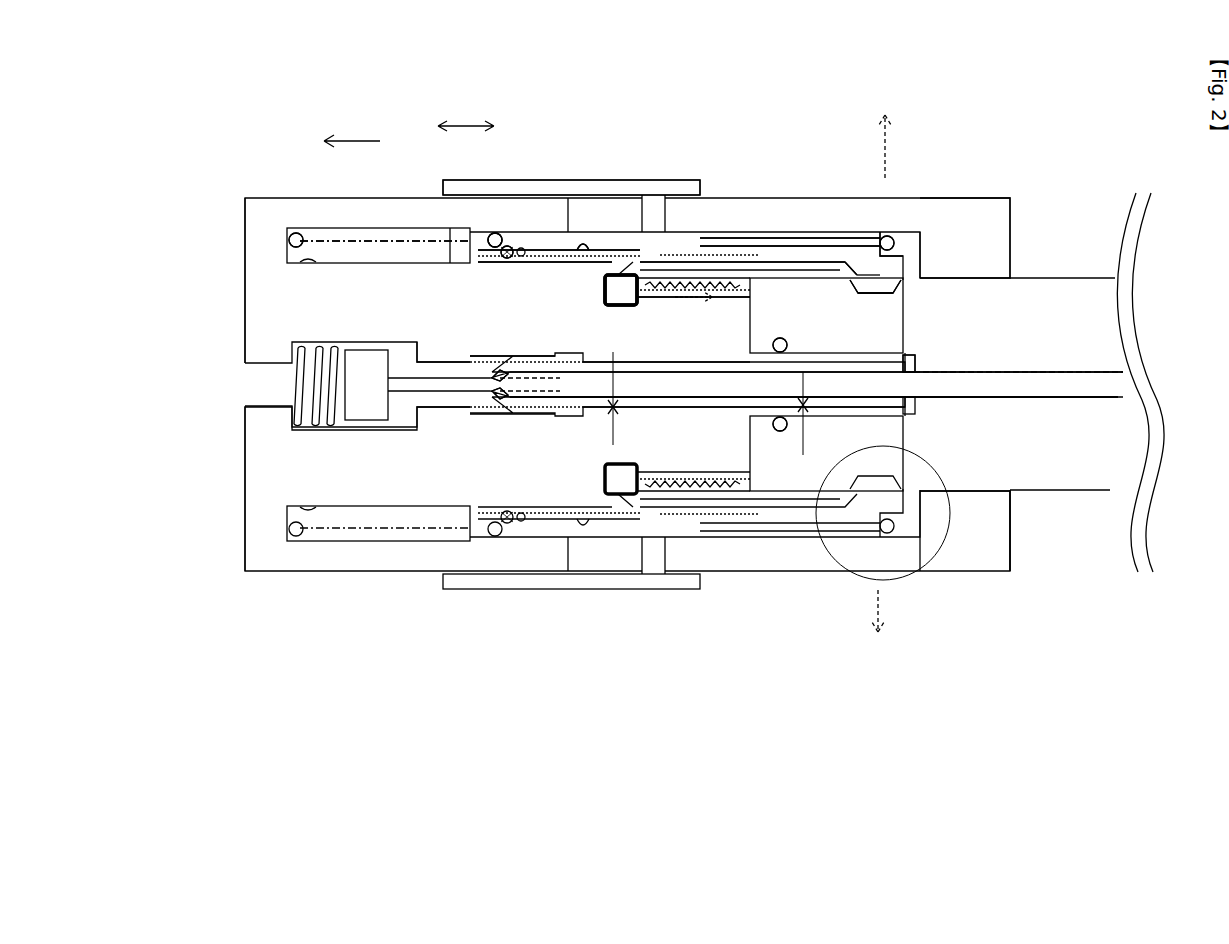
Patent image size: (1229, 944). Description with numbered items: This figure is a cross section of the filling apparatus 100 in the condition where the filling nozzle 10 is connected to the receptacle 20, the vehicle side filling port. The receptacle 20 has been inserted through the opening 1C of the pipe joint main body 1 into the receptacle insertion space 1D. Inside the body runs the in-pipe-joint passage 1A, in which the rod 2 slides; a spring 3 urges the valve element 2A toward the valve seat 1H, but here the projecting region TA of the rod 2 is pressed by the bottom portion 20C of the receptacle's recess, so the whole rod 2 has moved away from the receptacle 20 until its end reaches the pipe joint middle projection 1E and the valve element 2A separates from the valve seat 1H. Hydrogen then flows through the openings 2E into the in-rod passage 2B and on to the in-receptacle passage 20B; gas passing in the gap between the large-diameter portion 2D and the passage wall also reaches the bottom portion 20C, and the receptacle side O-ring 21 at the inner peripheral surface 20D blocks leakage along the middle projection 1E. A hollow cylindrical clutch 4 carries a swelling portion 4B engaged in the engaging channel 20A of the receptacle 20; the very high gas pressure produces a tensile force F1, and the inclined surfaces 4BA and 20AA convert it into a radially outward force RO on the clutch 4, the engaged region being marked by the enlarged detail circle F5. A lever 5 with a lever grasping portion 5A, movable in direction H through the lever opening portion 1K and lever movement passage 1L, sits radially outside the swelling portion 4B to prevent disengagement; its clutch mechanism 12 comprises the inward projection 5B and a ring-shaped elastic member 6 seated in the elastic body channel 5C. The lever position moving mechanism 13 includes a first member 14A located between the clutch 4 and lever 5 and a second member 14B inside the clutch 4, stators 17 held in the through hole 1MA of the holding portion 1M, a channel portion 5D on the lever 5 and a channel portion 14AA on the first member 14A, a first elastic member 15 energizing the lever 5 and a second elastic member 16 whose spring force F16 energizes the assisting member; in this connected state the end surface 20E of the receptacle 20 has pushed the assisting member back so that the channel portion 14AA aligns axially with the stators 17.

The pipe joint main body 1 is at (255, 247).
The in-pipe-joint passage 1A is at (470, 420).
The opening 1C is at (1012, 284).
The receptacle insertion space 1D is at (1042, 490).
The pipe joint middle projection 1E is at (908, 360).
The valve seat 1H is at (428, 357).
The lever opening portion 1K is at (503, 233).
The lever movement passage 1L is at (303, 265).
The holding portion 1M is at (464, 260).
The through hole 1MA is at (507, 258).
The rod 2 is at (698, 400).
The valve element 2A is at (372, 352).
The in-rod passage 2B is at (740, 400).
The large-diameter portion 2D is at (638, 362).
The openings 2E is at (502, 378).
The spring 3 is at (306, 341).
The clutch 4 is at (720, 266).
The swelling portion 4B is at (864, 265).
The inclined surface 4BA is at (852, 276).
The lever 5 is at (764, 237).
The lever grasping portion 5A is at (632, 180).
The projection 5B is at (922, 210).
The elastic body channel 5C is at (892, 230).
The channel portion 5D is at (584, 238).
The ring-shaped elastic member 6 is at (884, 239).
The filling nozzle 10 is at (263, 149).
The clutch mechanism 12 is at (839, 126).
The lever position moving mechanism 13 is at (594, 286).
The first member 14A is at (658, 262).
The channel portion 14AA is at (561, 274).
The second member 14B is at (784, 334).
The first elastic member 15 is at (372, 252).
The second elastic member 16 is at (640, 302).
The stators 17 is at (508, 233).
The receptacle 20 is at (1070, 278).
The engaging channel 20A is at (896, 294).
The inclined surface 20AA is at (872, 294).
The in-receptacle passage 20B is at (1058, 398).
The bottom portion 20C is at (906, 422).
The inner peripheral surface 20D is at (810, 408).
The end surface 20E is at (750, 330).
The receptacle side O-ring 21 is at (778, 432).
The filling apparatus 100 is at (1053, 195).
The tensile force F1 is at (352, 128).
The enlarged portion F5 is at (916, 584).
The spring force F16 is at (693, 311).
The arrow H is at (466, 112).
The radially outward force RO is at (878, 147).
The projecting region TA is at (920, 370).